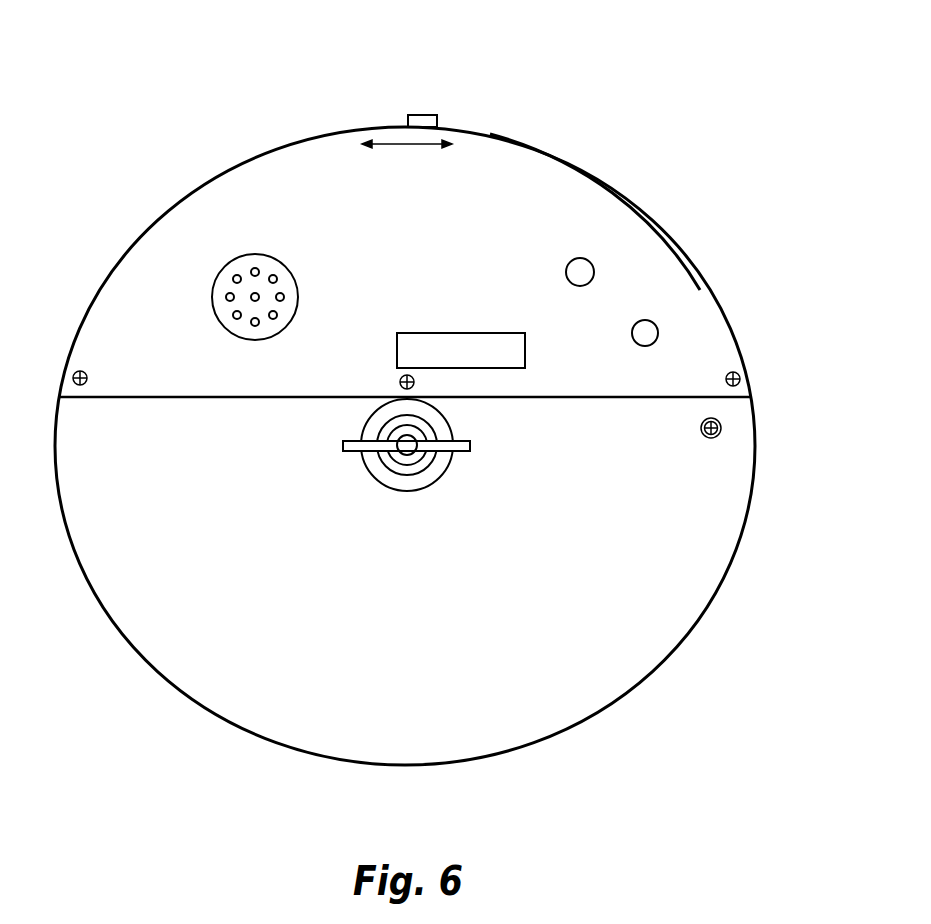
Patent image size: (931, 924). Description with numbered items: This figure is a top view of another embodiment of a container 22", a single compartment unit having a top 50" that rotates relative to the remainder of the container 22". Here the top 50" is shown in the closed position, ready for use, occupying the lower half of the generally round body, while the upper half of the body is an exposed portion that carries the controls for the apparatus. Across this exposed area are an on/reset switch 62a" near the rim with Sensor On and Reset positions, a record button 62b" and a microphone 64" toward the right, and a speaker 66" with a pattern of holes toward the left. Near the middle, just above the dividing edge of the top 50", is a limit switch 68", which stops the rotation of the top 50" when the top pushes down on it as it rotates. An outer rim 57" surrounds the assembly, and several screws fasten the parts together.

The container 22 is at (735, 122).
The top 50 is at (752, 503).
The outer edge of housing 57 is at (597, 195).
The on/reset switch 62a is at (423, 114).
The record button 62b is at (657, 325).
The microphone 64 is at (593, 262).
The speaker 66 is at (213, 276).
The limit switch 68 is at (493, 369).